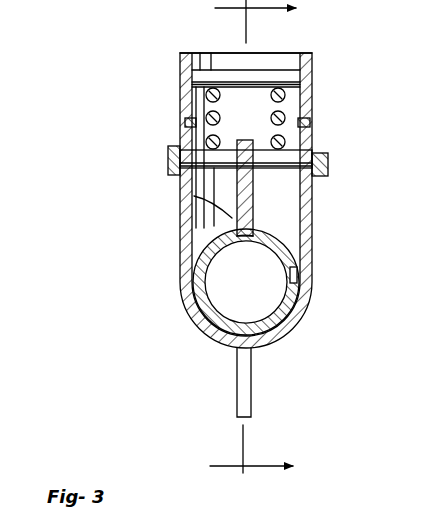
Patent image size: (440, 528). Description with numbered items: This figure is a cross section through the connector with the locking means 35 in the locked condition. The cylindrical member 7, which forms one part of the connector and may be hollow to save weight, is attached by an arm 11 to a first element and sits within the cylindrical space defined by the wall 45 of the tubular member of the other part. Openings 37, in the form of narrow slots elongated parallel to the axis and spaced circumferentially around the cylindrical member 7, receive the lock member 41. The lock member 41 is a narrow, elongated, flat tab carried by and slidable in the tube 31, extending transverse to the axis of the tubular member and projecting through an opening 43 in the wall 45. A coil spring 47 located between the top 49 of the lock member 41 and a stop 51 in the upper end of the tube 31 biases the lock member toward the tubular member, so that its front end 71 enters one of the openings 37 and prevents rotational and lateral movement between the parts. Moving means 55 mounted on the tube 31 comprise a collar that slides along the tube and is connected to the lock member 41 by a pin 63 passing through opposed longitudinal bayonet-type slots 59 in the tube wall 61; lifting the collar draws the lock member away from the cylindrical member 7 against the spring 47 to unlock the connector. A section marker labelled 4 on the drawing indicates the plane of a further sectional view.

The section line 4- 4 is at (253, 253).
The cylindrical member 7 is at (198, 302).
The arm 11 is at (245, 359).
The tube 31 is at (314, 78).
The locking means 35 is at (228, 177).
The openings 37 is at (298, 278).
The lock member 41 is at (250, 193).
The opening 43 is at (235, 221).
The wall 45 is at (238, 207).
The coil spring 47 is at (214, 117).
The top 49 is at (210, 95).
The stop 51 is at (228, 72).
The moving means 55 is at (331, 168).
The slots 59 is at (187, 123).
The tube wall 61 is at (285, 53).
The pin 63 is at (326, 150).
The front end 71 is at (193, 265).